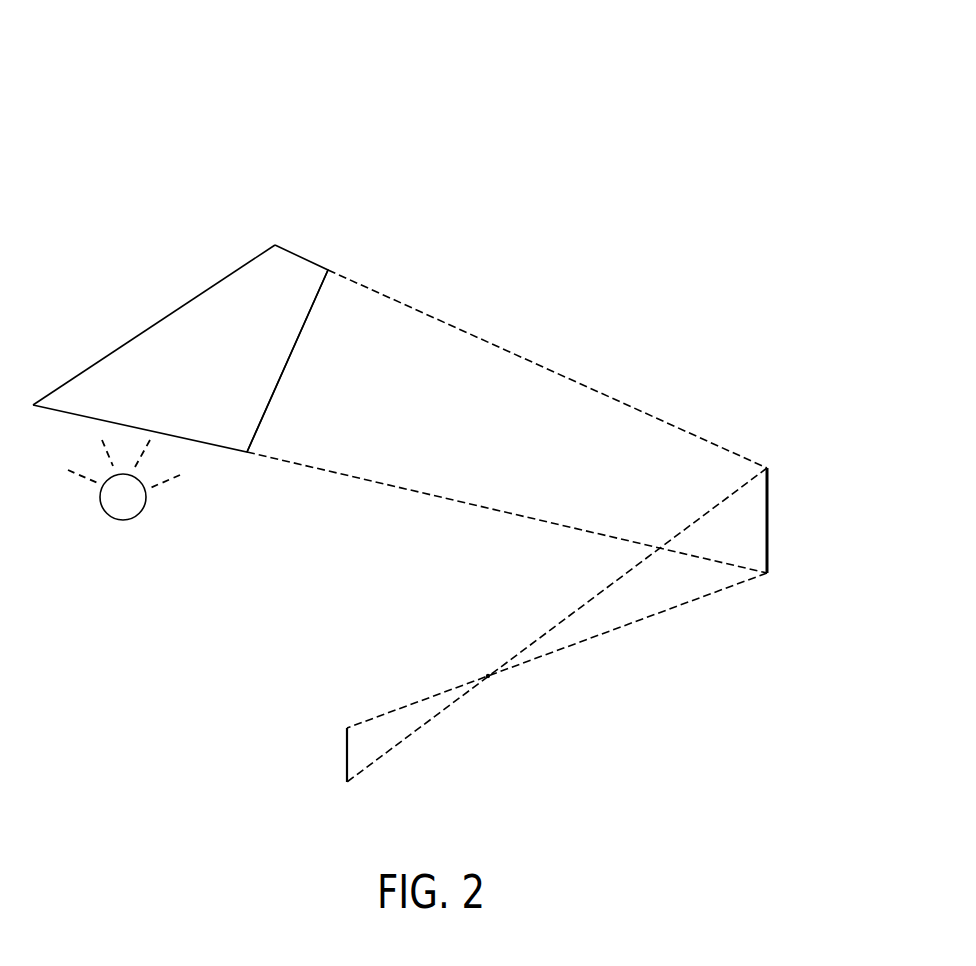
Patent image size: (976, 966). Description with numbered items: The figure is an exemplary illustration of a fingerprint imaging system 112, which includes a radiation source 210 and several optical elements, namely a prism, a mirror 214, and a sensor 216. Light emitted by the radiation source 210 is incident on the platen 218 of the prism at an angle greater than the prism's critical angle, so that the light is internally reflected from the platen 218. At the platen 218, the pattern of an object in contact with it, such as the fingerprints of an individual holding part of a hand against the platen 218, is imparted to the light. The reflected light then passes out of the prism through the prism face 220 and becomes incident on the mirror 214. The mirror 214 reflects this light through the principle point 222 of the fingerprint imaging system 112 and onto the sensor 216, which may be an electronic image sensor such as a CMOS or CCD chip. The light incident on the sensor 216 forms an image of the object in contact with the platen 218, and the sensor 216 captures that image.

The fingerprint imaging system 112 is at (160, 128).
The platen 218 is at (195, 297).
The prism face 220 is at (314, 300).
The radiation source 210 is at (130, 519).
The mirror 214 is at (770, 510).
The sensor 216 is at (347, 752).
The principle point 222 is at (492, 678).